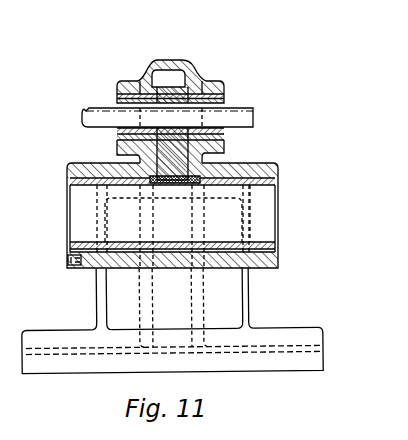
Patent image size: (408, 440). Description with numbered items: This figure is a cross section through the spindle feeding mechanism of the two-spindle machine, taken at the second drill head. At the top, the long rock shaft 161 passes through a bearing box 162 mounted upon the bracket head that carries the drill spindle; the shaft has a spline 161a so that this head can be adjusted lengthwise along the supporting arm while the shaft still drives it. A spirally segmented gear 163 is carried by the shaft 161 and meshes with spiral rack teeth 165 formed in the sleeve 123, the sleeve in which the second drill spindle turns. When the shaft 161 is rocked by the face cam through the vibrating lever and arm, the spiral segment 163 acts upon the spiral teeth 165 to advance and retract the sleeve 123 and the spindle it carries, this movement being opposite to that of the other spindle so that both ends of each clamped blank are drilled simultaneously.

The sleeve 123 is at (278, 181).
The rock shaft 161 is at (254, 118).
The spline 161a is at (226, 98).
The bearing boxes 162 is at (213, 79).
The spirally segmented gears 163 is at (173, 88).
The spiral rack teeth 165 is at (181, 178).